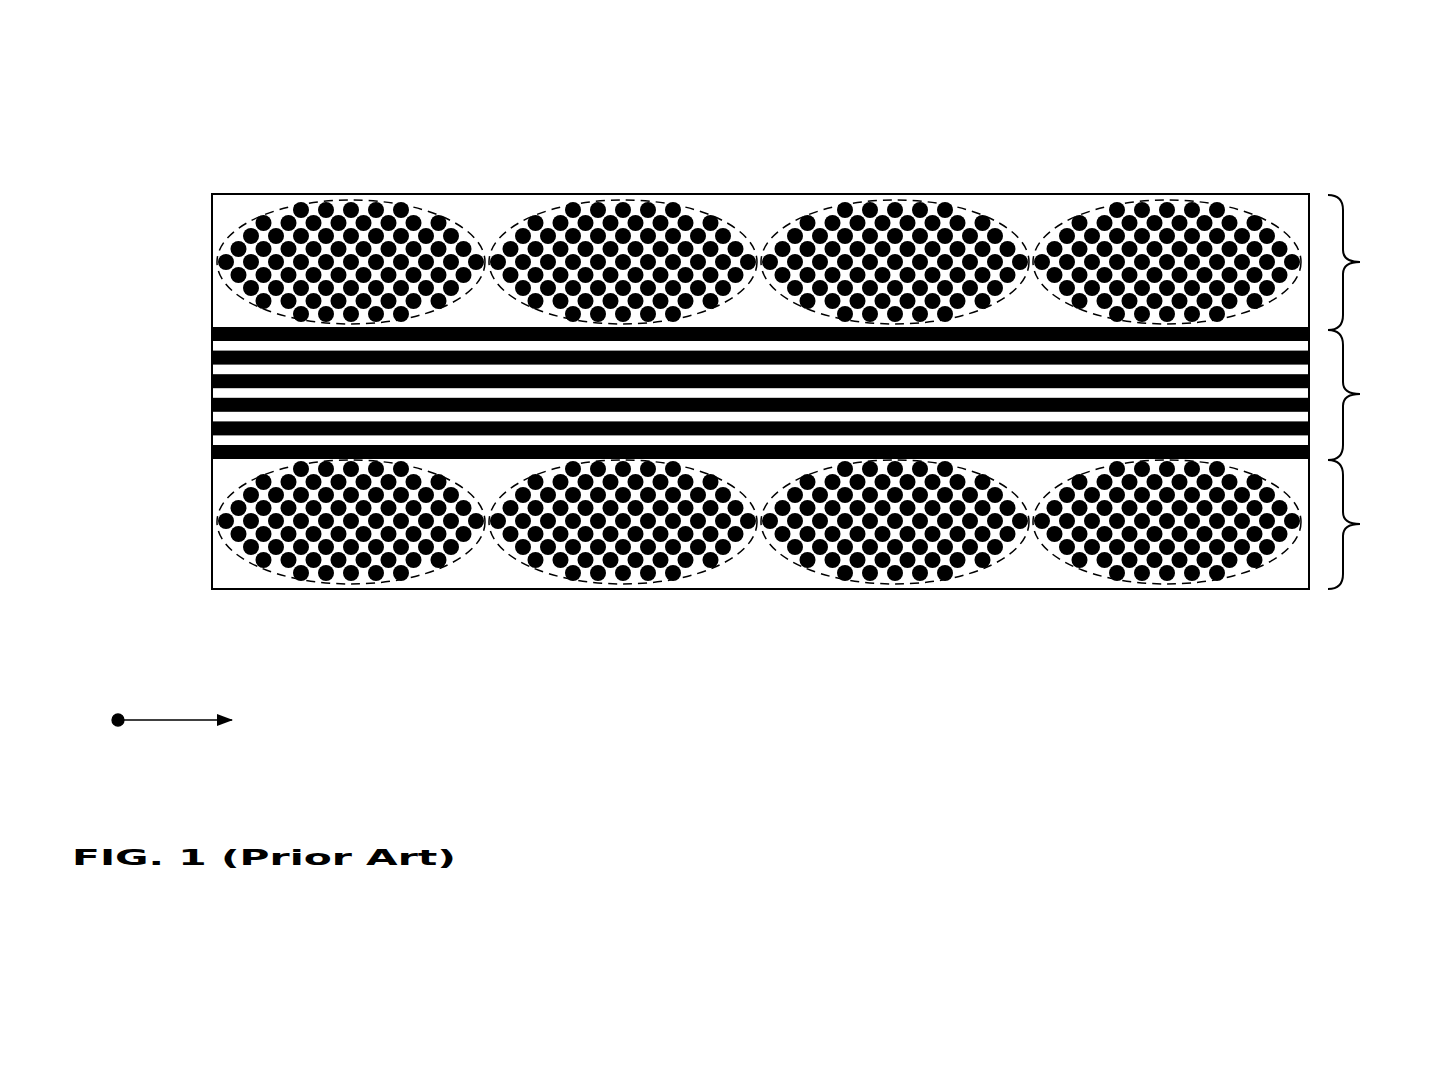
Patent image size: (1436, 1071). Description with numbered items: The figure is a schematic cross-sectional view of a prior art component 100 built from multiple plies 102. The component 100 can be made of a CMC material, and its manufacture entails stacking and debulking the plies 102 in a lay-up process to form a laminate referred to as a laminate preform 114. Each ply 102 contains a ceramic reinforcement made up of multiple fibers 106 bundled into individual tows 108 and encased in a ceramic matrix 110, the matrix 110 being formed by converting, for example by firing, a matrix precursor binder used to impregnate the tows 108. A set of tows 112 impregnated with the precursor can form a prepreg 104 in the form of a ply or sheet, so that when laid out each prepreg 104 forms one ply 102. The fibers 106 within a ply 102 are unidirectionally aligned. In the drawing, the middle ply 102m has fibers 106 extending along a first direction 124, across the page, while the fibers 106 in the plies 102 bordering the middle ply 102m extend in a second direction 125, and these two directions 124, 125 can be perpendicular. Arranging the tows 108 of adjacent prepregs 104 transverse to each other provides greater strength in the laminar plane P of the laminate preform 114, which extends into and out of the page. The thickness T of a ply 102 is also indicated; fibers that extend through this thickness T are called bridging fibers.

The component 100 is at (778, 356).
The ply 102 is at (815, 347).
The middle ply 102m is at (778, 496).
The prepreg 104 is at (197, 271).
The fibers 106 is at (211, 380).
The tow 108 is at (1257, 195).
The ceramic matrix 110 is at (760, 563).
The set of tows 112 is at (1041, 195).
The laminate preform 114 is at (481, 193).
The laminar plane P is at (753, 195).
The thickness T is at (153, 453).
The first direction 124 is at (201, 723).
The second direction 125 is at (118, 714).